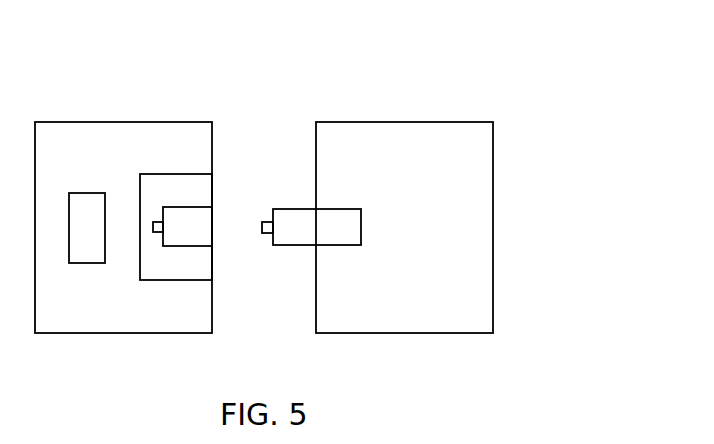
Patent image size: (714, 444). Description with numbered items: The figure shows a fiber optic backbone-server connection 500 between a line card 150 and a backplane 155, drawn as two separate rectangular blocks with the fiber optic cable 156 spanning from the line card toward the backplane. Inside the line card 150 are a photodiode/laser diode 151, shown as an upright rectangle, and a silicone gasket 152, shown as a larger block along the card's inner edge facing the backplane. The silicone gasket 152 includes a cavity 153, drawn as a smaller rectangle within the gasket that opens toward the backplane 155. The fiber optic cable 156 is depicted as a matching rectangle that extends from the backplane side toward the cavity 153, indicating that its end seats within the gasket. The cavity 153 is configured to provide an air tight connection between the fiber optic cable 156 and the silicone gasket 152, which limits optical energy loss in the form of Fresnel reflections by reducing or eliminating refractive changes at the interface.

The fiber optic backbone-server connection 500 is at (590, 49).
The line card 150 is at (186, 107).
The photodiode/laser diode 151 is at (90, 193).
The silicone gasket 152 is at (175, 174).
The cavity 153 is at (193, 228).
The backplane 155 is at (468, 108).
The fiber optic cable 156 is at (343, 228).